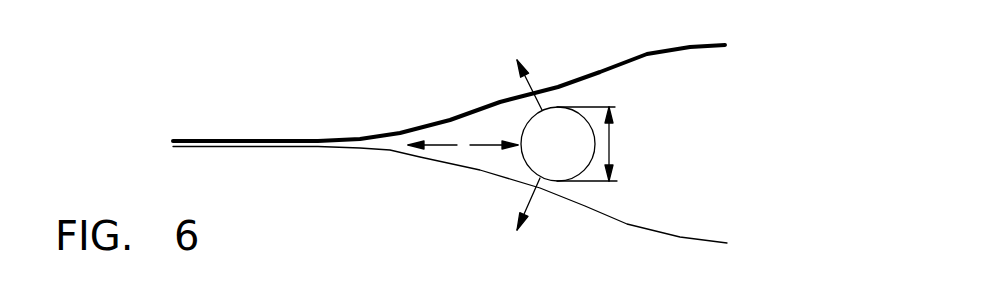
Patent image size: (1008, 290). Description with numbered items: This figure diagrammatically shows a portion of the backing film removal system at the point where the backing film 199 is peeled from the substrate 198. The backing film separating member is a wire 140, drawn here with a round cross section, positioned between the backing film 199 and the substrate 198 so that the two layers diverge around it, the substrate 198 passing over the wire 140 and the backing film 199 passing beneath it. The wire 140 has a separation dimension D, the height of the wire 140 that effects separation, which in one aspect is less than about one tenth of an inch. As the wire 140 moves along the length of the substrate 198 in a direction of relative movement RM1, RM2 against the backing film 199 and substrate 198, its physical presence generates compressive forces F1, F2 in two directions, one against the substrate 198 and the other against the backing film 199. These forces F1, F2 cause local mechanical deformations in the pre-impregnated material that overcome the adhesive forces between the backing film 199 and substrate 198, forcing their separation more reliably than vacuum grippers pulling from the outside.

The substrate 198 is at (647, 53).
The backing film 199 is at (627, 225).
The wire 140 is at (528, 166).
The compressive force F1 is at (533, 84).
The compressive force F2 is at (536, 200).
The direction of relative movement RM1 is at (446, 148).
The direction of relative movement RM2 is at (486, 143).
The separation dimension D is at (610, 144).